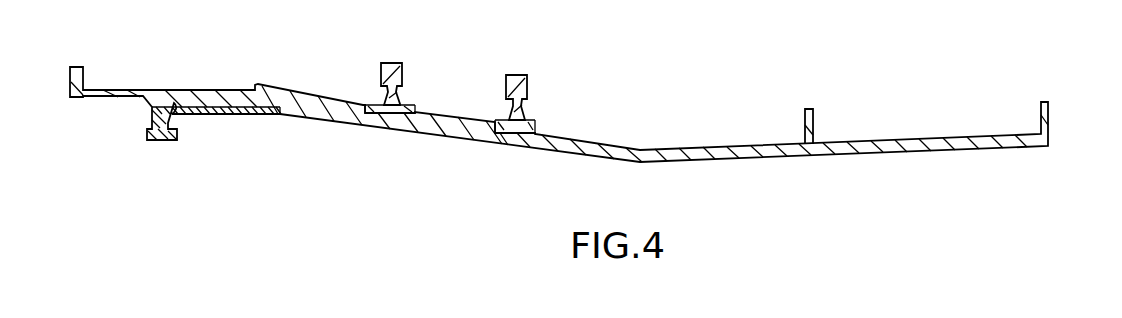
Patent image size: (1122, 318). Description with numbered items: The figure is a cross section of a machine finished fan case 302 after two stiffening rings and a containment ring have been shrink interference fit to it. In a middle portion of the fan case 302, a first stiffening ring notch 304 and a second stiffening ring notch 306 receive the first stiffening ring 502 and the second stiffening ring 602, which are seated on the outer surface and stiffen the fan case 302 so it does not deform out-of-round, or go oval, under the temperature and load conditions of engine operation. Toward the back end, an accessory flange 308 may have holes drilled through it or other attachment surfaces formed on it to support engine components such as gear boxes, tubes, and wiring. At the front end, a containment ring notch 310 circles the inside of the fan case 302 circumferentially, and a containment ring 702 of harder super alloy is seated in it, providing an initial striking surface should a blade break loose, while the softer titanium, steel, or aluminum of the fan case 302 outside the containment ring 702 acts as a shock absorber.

The fan case 302 is at (912, 135).
The first stiffening ring notch 304 is at (397, 115).
The second stiffening ring notch 306 is at (513, 137).
The accessory flange 308 is at (810, 108).
The containment ring notch 310 is at (214, 106).
The first stiffening ring 502 is at (393, 63).
The second stiffening ring 602 is at (515, 75).
The containment ring 702 is at (162, 140).